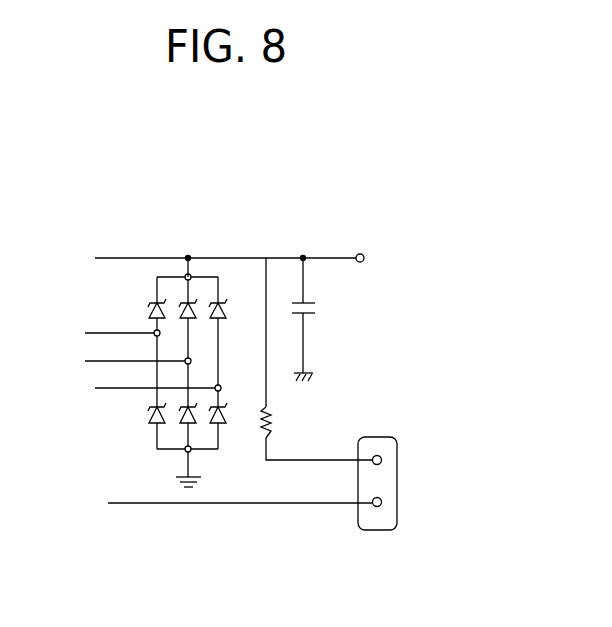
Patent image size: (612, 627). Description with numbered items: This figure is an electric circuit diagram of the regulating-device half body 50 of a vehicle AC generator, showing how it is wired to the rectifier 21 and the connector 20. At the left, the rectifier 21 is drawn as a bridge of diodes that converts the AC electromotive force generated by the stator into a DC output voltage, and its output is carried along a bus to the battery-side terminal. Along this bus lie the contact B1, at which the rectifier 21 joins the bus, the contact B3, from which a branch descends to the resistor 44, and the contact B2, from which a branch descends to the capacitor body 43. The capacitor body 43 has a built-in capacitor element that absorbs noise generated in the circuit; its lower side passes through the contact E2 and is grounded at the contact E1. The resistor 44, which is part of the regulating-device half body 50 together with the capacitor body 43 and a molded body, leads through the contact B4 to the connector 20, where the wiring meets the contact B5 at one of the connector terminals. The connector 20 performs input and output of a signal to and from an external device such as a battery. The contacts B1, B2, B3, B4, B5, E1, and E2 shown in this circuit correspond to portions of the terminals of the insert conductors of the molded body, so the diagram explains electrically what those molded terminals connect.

The rectifier 21 is at (150, 292).
The contact B1 is at (187, 253).
The contact B2 is at (307, 253).
The contact B3 is at (267, 254).
The contact B4 is at (262, 468).
The contact B5 is at (388, 462).
The regulating-device half body 50 is at (423, 222).
The capacitor body 43 is at (325, 297).
The resistor 44 is at (272, 411).
The contact E1 is at (318, 375).
The contact E2 is at (318, 326).
The connector 20 is at (393, 512).